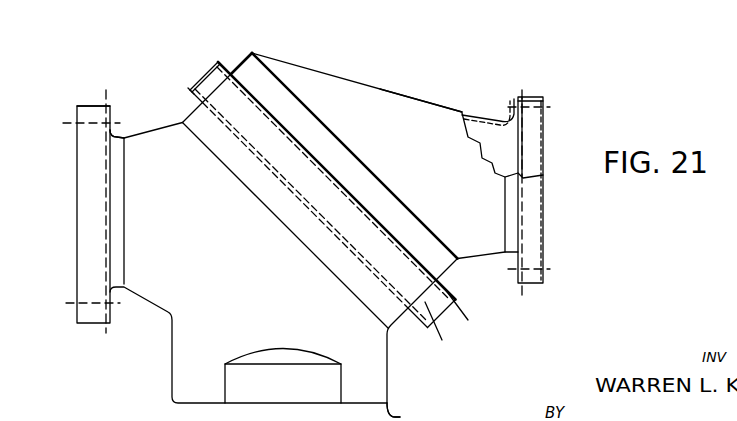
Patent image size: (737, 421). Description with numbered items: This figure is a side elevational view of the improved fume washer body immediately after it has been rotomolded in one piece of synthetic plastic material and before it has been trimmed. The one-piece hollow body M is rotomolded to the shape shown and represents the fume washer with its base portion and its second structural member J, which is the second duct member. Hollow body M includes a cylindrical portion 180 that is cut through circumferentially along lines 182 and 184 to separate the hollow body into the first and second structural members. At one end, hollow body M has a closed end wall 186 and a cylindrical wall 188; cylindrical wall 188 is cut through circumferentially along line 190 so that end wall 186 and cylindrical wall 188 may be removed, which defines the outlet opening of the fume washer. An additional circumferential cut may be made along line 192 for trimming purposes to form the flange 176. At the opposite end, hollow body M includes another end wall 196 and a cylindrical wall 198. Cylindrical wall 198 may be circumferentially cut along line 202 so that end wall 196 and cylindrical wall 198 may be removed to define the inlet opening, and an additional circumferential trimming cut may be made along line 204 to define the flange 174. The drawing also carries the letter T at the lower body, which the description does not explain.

The flange 174 is at (116, 134).
The flange 176 is at (491, 110).
The cylindrical portion 180 is at (198, 75).
The cutting line 182 is at (187, 81).
The cutting line 184 is at (211, 57).
The closed end wall 186 is at (547, 116).
The cylindrical wall 188 is at (541, 98).
The cutting line 190 is at (522, 96).
The trimming line 192 is at (507, 111).
The end wall 196 is at (77, 250).
The cylindrical wall 198 is at (84, 104).
The cutting line 202 is at (106, 94).
The trimming line 204 is at (66, 124).
The one-piece hollow body M is at (339, 71).
The second structural member J is at (400, 90).
The body bottom T is at (399, 412).